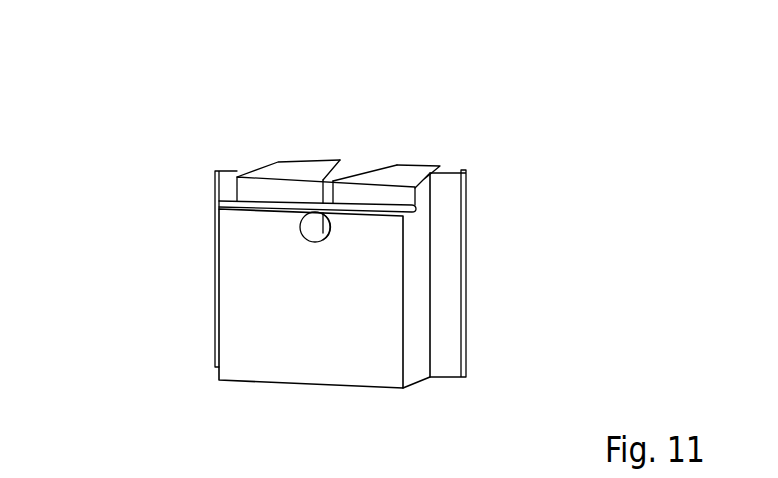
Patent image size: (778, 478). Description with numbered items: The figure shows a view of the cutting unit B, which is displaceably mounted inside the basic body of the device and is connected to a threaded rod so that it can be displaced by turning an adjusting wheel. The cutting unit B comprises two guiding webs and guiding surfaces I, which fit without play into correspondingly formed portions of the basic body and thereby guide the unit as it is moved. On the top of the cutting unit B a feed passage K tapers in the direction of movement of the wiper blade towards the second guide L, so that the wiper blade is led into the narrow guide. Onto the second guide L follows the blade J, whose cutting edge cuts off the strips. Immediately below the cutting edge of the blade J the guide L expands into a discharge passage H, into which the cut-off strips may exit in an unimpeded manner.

The guiding webs and guiding surfaces I is at (387, 313).
The blade J is at (250, 195).
The cutting unit B is at (425, 173).
The feed passage K is at (358, 160).
The second guide L is at (318, 180).
The discharge passage H is at (300, 228).